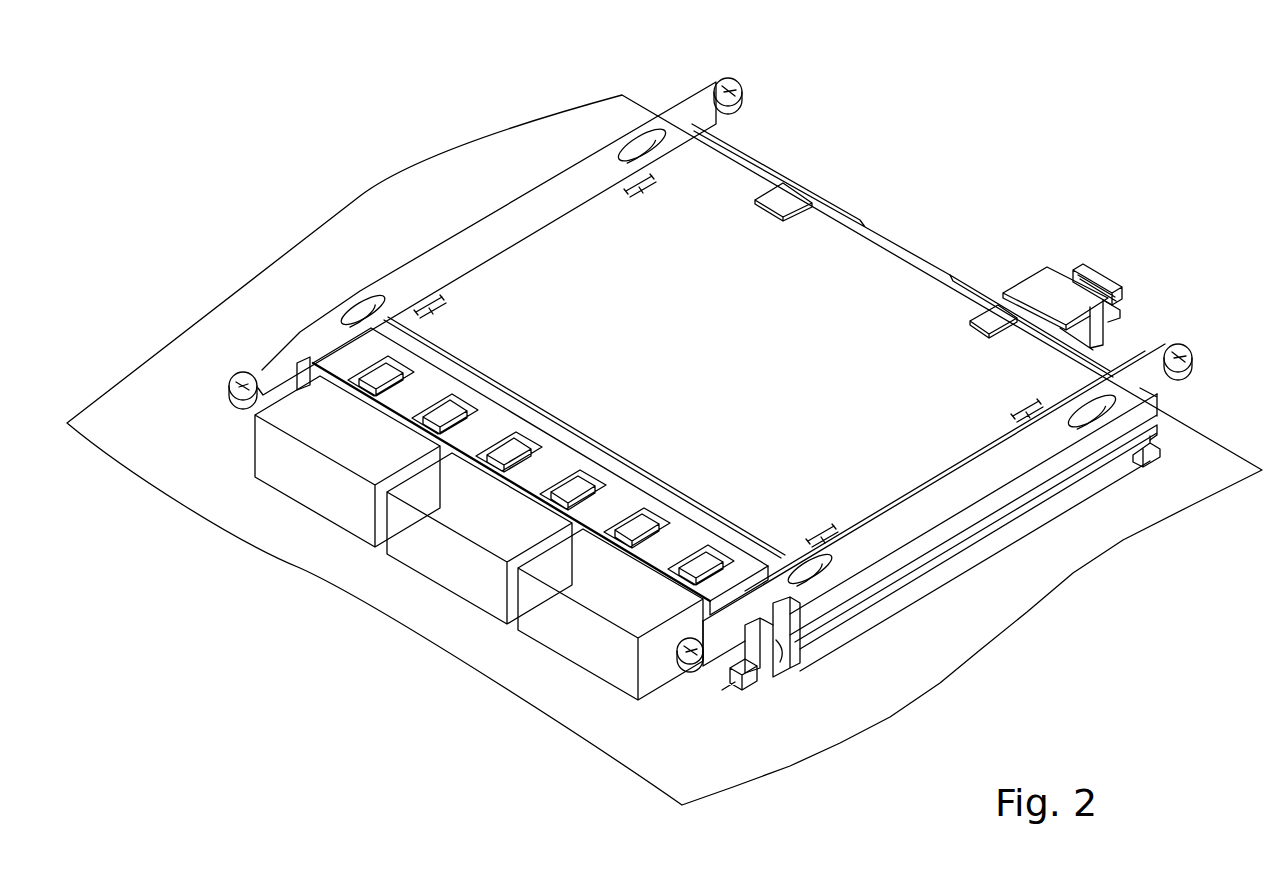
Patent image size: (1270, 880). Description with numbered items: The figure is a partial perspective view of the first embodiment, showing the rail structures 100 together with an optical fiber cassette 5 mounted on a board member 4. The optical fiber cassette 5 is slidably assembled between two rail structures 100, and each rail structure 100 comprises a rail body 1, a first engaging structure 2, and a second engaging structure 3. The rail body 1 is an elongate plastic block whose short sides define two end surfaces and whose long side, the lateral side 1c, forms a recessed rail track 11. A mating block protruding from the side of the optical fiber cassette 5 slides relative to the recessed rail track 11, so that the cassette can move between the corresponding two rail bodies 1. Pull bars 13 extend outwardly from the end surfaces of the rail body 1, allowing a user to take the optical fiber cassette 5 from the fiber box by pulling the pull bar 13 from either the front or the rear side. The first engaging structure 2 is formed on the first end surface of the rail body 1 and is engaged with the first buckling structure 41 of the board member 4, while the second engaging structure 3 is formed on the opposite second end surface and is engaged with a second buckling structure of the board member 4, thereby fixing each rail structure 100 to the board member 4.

The rail structure 100 is at (427, 247).
The rail body 1 is at (497, 237).
The lateral side 1c is at (1055, 505).
The recessed rail track 11 is at (905, 565).
The pull bar 13 is at (688, 102).
The first engaging structure 2 is at (770, 667).
The second engaging structure 3 is at (1136, 455).
The board member 4 is at (398, 587).
The first buckling structure 41 is at (733, 680).
The optical fiber cassette 5 is at (706, 370).